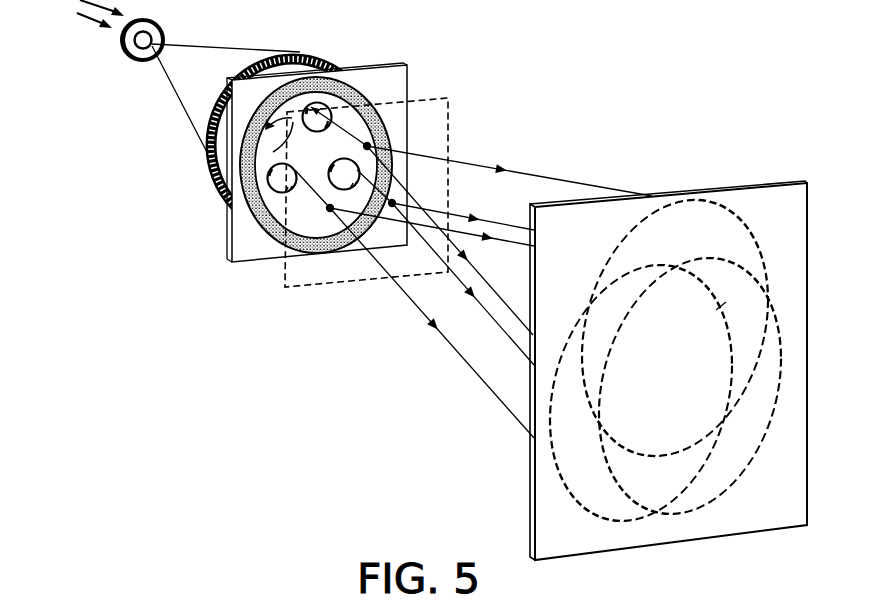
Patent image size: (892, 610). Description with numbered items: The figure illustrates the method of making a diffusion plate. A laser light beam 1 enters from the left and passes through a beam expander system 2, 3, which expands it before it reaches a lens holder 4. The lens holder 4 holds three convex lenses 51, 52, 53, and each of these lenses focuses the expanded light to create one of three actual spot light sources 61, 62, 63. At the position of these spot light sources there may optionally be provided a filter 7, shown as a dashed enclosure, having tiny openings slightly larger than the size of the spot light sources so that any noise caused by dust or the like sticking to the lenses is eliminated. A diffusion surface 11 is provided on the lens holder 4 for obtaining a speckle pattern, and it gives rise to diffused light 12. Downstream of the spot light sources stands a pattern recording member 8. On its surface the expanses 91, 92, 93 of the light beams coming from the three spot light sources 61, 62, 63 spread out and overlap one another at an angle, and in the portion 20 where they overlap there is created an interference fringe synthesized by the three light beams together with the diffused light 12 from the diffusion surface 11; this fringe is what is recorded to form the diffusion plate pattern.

The laser light beam 1 is at (91, 15).
The beam expander system 2 is at (158, 26).
The beam expander system 3 is at (291, 52).
The lens holder 4 is at (372, 67).
The filter 7 is at (446, 98).
The pattern recording member 8 is at (720, 188).
The diffusion surface 11 is at (372, 127).
The diffused light 12 is at (293, 139).
The portion 20 is at (709, 317).
The lens 51 is at (268, 183).
The lens 52 is at (335, 105).
The lens 53 is at (359, 178).
The actual spot light source 61 is at (330, 209).
The actual spot light source 62 is at (371, 146).
The actual spot light source 63 is at (392, 206).
The expanse of light beam 91 is at (556, 460).
The expanse of light beam 92 is at (747, 226).
The expanse of light beam 93 is at (622, 477).